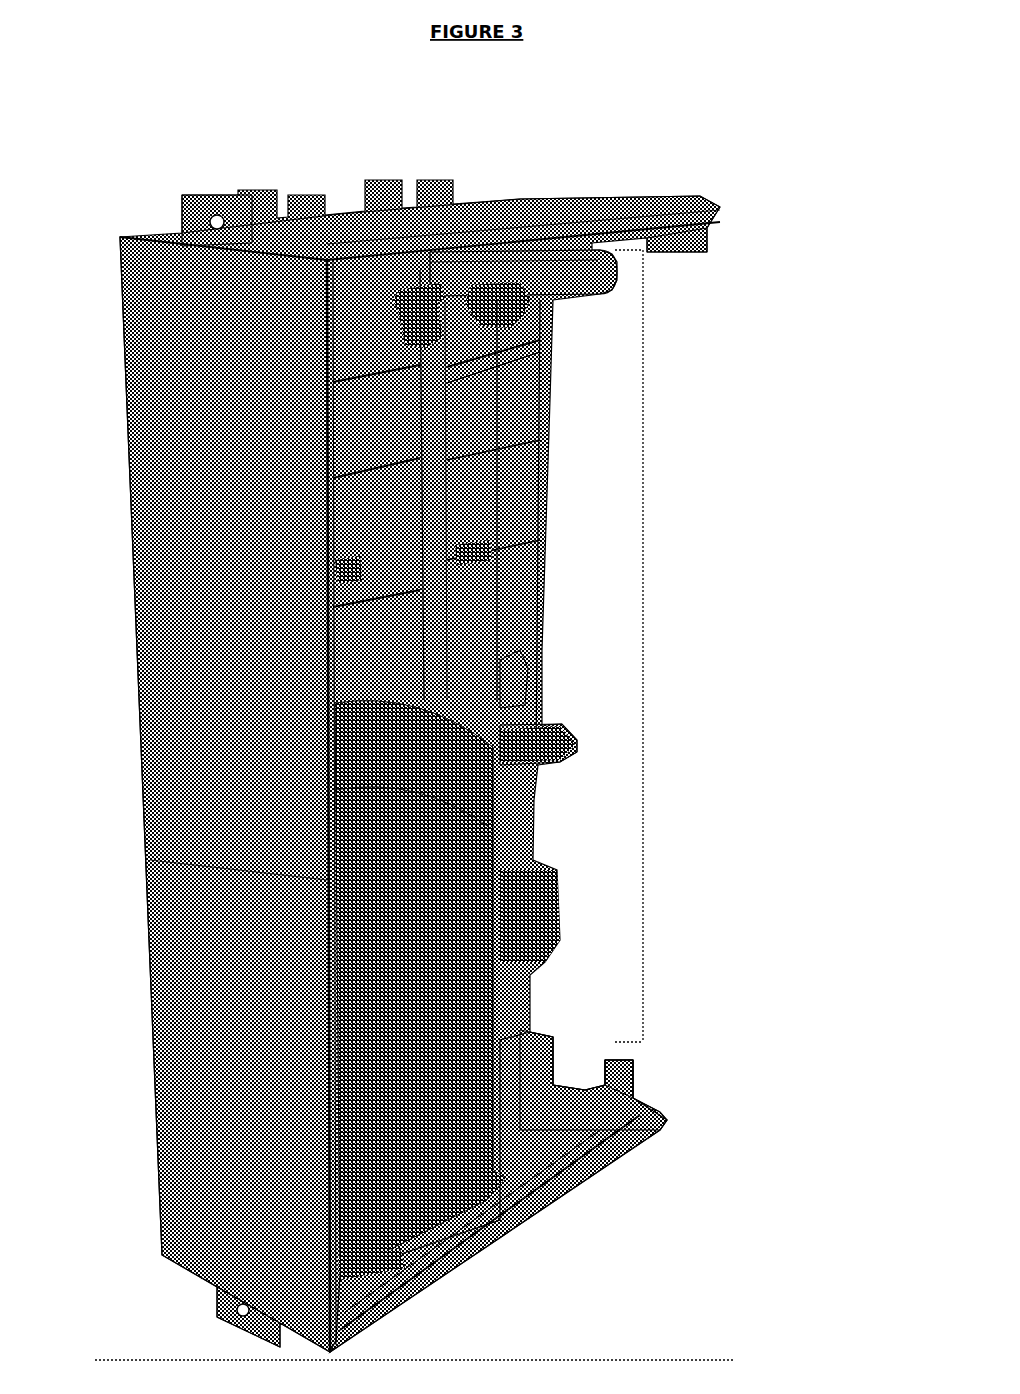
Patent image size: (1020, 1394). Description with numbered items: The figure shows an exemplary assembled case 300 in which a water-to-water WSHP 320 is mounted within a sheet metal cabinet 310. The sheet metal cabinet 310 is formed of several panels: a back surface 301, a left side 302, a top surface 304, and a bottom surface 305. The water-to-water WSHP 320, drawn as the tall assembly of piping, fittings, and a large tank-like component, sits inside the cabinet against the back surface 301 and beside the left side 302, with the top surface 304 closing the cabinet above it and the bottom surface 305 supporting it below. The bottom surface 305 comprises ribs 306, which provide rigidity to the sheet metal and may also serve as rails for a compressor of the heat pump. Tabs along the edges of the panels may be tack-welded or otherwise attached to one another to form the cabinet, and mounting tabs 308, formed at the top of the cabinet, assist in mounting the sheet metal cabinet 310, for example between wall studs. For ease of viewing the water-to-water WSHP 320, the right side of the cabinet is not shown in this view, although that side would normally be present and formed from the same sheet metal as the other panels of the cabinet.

The cooling system assembly 300 is at (424, 696).
The back surface 301 is at (510, 602).
The left side 302 is at (228, 794).
The top surface 304 is at (443, 230).
The bottom surface 305 is at (538, 1191).
The ribs 306 is at (618, 1125).
The mounting tabs 308 is at (175, 202).
The sheet metal cabinet 310 is at (112, 636).
The water-to-water WSHP 320 is at (645, 602).